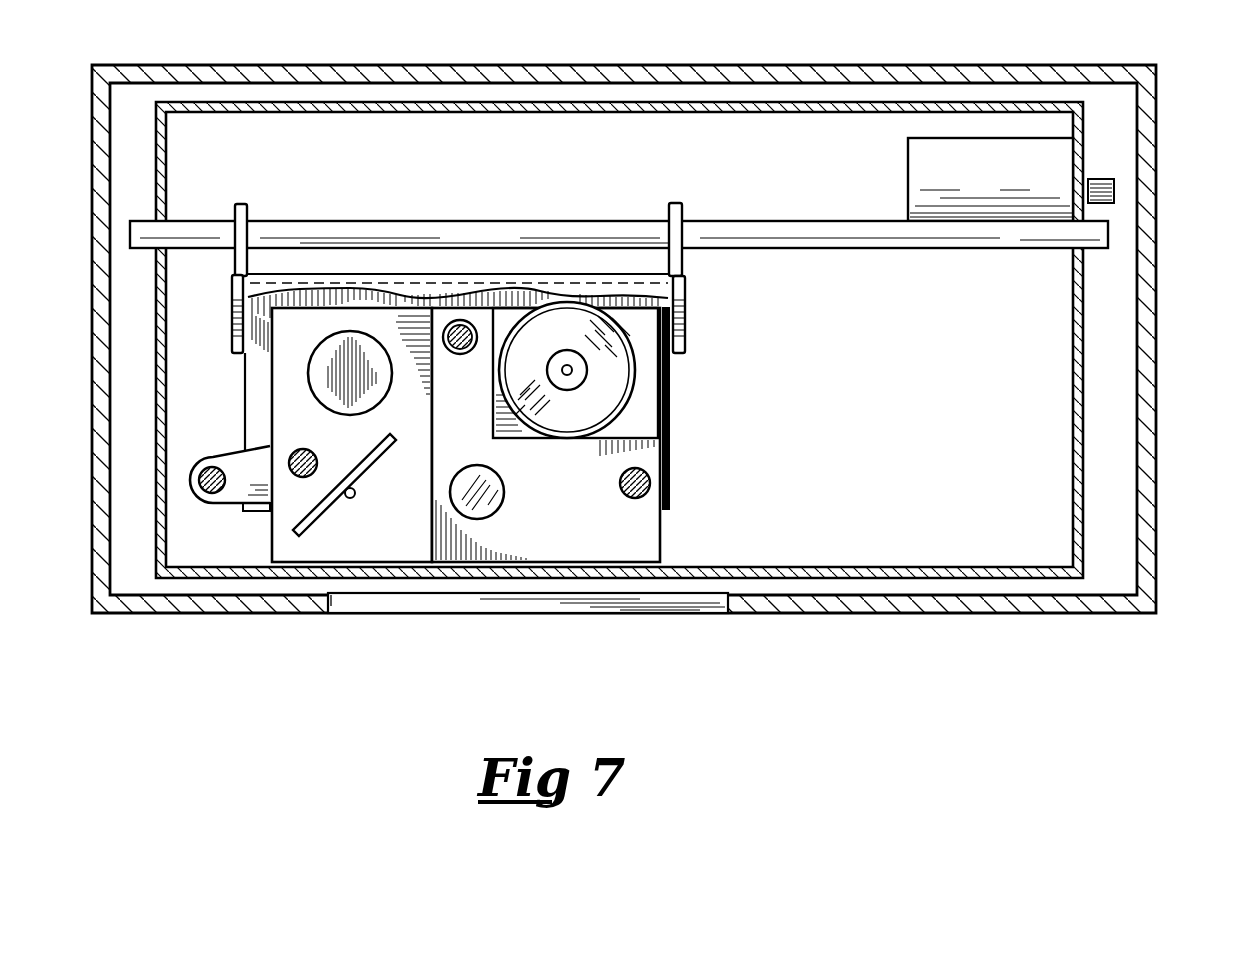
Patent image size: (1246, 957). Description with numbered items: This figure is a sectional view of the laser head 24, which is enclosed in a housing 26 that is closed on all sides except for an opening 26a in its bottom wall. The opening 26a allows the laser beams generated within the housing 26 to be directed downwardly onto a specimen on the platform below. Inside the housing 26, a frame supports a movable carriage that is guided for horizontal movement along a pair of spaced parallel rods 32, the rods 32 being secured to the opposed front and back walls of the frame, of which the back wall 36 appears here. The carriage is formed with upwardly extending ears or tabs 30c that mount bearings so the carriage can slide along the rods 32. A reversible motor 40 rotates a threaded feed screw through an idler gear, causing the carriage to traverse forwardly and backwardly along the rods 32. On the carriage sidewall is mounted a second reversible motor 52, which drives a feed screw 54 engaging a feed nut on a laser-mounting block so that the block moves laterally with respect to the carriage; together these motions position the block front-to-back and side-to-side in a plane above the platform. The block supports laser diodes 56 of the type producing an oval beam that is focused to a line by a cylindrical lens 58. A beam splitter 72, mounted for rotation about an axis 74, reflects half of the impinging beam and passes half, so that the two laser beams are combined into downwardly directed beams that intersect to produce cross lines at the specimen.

The laser head 24 is at (1176, 146).
The housing 26 is at (1157, 272).
The opening 26a is at (335, 600).
The ears or tabs 30c is at (243, 204).
The rods 32 is at (401, 220).
The back wall 36 is at (1073, 338).
The reversible motor 40 is at (1000, 181).
The reversible motor 52 is at (622, 375).
The feed screw 54 is at (460, 354).
The laser diodes 56 is at (308, 373).
The cylindrical lens 58 is at (504, 492).
The beam splitter 72 is at (372, 462).
The axis 74 is at (350, 498).